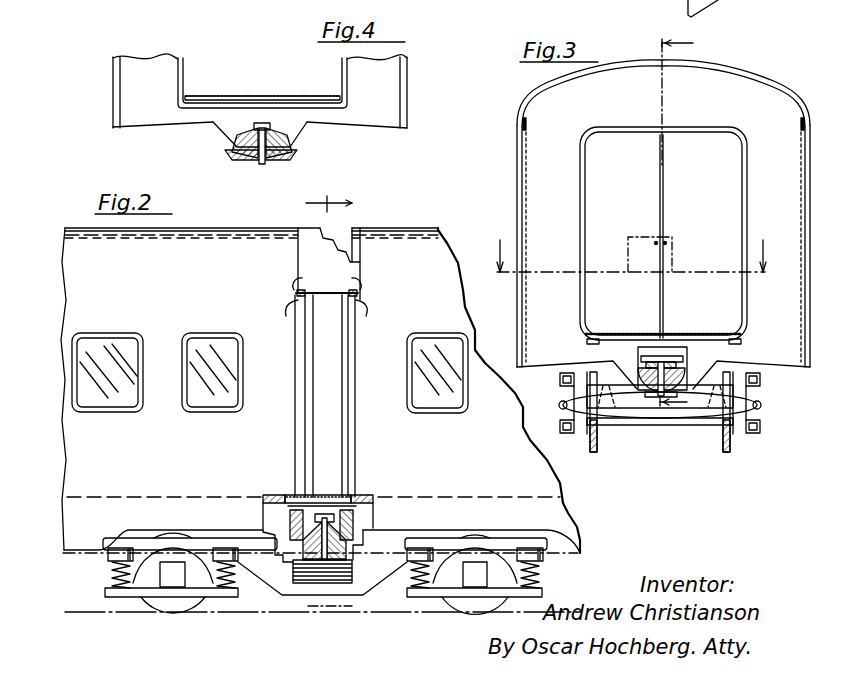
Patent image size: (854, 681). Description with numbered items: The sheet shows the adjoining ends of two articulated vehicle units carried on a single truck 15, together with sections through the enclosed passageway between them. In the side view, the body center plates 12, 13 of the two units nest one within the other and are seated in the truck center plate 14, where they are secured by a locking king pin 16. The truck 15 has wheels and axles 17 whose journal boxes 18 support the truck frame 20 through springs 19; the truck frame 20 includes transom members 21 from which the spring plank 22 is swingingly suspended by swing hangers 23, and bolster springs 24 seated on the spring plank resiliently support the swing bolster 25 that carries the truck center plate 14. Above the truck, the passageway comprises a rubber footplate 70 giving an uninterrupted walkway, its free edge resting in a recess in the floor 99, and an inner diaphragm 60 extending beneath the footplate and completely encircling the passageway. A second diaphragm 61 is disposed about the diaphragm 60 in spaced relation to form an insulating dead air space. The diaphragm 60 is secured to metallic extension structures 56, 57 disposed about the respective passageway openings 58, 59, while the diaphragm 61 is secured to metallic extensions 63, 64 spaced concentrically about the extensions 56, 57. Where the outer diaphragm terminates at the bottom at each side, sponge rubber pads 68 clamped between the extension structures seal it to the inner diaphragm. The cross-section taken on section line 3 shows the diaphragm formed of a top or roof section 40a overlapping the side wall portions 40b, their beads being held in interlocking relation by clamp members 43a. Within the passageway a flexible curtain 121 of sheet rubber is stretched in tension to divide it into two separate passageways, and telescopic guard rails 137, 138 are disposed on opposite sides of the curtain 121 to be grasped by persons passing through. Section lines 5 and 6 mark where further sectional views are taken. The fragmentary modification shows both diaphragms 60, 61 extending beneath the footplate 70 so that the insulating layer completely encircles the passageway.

In FIG. 2, the section line 3— 3 is at (322, 406).
In FIG. 3, the section line 5— 5 is at (630, 248).
In FIG. 3, the section line 6— 6 is at (685, 223).
In FIG. 4, the body center plate 12 is at (240, 124).
In FIG. 3, the body center plate 12 is at (661, 369).
In FIG. 2, the body center plate 12 is at (340, 524).
In FIG. 4, the body center plate 13 is at (292, 127).
In FIG. 3, the body center plate 13 is at (640, 366).
In FIG. 2, the body center plate 13 is at (302, 538).
In FIG. 4, the truck center plate 14 is at (244, 181).
In FIG. 3, the truck center plate 14 is at (652, 400).
In FIG. 2, the truck center plate 14 is at (303, 545).
In FIG. 3, the truck 15 is at (770, 432).
In FIG. 2, the truck 15 is at (258, 587).
In FIG. 4, the locking king pin 16 is at (262, 161).
In FIG. 3, the locking king pin 16 is at (665, 368).
In FIG. 2, the locking king pin 16 is at (330, 530).
In FIG. 3, the wheels and axles 17 is at (593, 452).
In FIG. 2, the wheels and axles 17 is at (163, 604).
In FIG. 2, the journal box 18 is at (323, 572).
In FIG. 2, the spring 19 is at (108, 575).
In FIG. 3, the truck frame 20 is at (566, 433).
In FIG. 2, the truck frame 20 is at (258, 546).
In FIG. 3, the transom member 21 is at (587, 385).
In FIG. 3, the spring plank 22 is at (680, 418).
In FIG. 3, the swing hanger 23 is at (608, 412).
In FIG. 3, the bolster spring 24 is at (561, 402).
In FIG. 2, the bolster spring 24 is at (345, 580).
In FIG. 3, the swing bolster 25 is at (646, 420).
In FIG. 3, the top or roof section of diaphragm 40a is at (724, 75).
In FIG. 3, the side wall portion of diaphragm 40b is at (518, 184).
In FIG. 3, the clamp member 43a is at (527, 125).
In FIG. 2, the metallic extension structure 56 is at (364, 305).
In FIG. 2, the metallic extension structure 57 is at (292, 300).
In FIG. 2, the passageway opening 58 is at (356, 336).
In FIG. 2, the passageway opening 59 is at (298, 328).
In FIG. 4, the diaphragm 60 is at (178, 75).
In FIG. 3, the diaphragm 60 is at (588, 170).
In FIG. 2, the diaphragm 60 is at (310, 528).
In FIG. 3, the second diaphragm 61 is at (580, 187).
In FIG. 2, the second diaphragm 61 is at (334, 291).
In FIG. 2, the metallic extension 63 is at (360, 282).
In FIG. 2, the metallic extension 64 is at (296, 282).
In FIG. 3, the sponge rubber pad 68 is at (606, 342).
In FIG. 4, the footplate 70 is at (268, 96).
In FIG. 3, the footplate 70 is at (662, 355).
In FIG. 2, the footplate 70 is at (320, 505).
In FIG. 2, the floor 99 is at (258, 497).
In FIG. 3, the curtain 121 is at (665, 195).
In FIG. 3, the telescopic guard rail 137 is at (667, 244).
In FIG. 3, the telescopic guard rail 138 is at (655, 244).